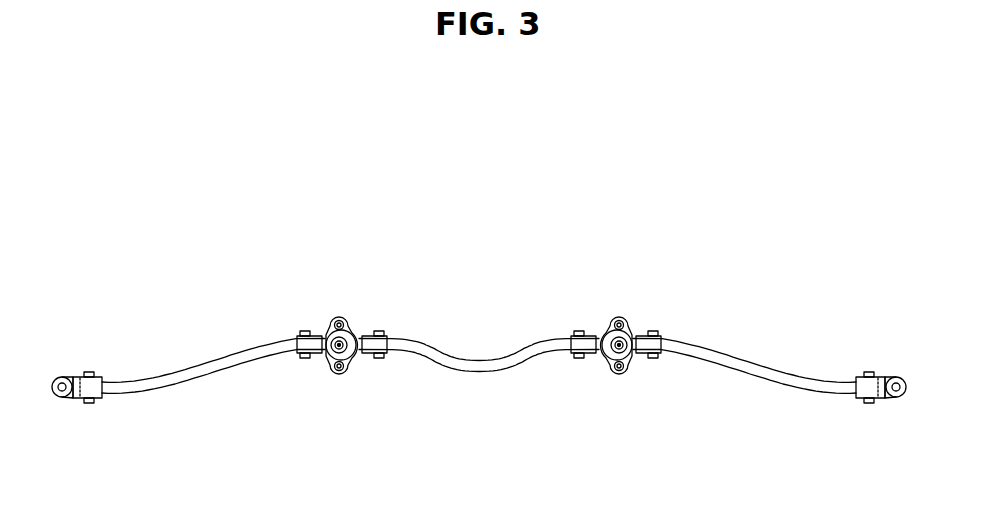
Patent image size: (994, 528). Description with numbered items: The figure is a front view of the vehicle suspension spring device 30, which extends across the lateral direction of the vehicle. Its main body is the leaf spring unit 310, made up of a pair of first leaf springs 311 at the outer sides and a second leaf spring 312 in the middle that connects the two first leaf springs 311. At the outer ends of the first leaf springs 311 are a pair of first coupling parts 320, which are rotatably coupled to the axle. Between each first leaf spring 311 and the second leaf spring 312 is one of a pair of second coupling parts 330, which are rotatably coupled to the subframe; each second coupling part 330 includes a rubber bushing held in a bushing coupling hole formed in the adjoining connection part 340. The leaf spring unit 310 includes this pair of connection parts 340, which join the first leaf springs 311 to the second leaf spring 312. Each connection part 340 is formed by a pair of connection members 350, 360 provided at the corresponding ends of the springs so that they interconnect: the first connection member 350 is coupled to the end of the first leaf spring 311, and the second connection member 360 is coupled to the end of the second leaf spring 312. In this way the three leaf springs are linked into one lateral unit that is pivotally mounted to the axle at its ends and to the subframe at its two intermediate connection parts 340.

The vehicle suspension spring device 30 is at (224, 160).
The leaf spring unit 310 is at (713, 248).
The first leaf springs 311 is at (242, 345).
The second leaf spring 312 is at (478, 362).
The first coupling parts 320 is at (70, 415).
The second coupling parts 330 is at (343, 349).
The connection parts 340 is at (342, 392).
The first connection member 350 is at (318, 353).
The second connection member 360 is at (364, 365).